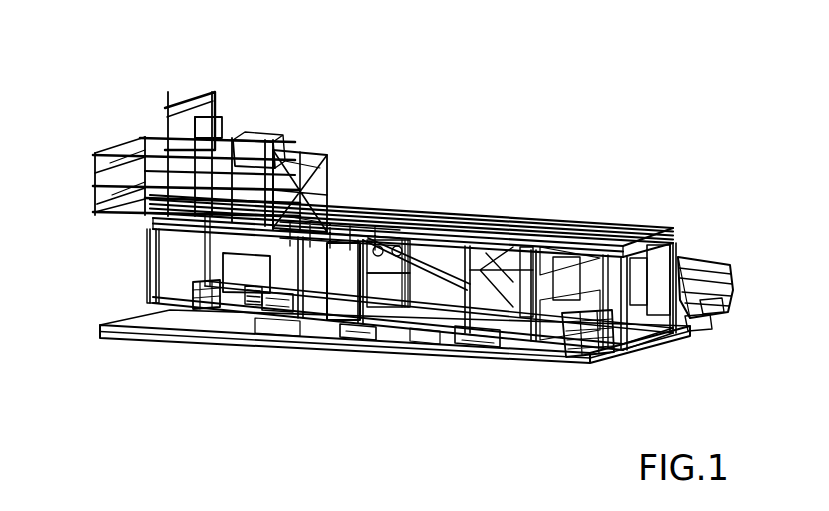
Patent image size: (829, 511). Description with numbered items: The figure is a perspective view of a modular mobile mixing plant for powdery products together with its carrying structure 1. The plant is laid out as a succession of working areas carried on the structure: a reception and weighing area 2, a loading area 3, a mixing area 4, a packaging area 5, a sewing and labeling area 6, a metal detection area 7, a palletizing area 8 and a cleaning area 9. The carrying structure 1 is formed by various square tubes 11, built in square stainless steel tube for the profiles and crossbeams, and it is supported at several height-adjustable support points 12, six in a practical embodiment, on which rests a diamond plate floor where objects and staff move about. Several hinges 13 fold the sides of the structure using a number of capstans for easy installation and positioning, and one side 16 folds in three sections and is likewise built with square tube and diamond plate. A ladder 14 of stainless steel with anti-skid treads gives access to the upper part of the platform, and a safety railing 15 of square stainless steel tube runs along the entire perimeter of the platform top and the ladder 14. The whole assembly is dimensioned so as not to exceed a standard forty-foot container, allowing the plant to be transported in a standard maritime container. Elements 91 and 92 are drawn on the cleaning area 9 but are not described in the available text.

The carrying structure 1 is at (418, 207).
The reception and weighing area 2 is at (127, 120).
The loading area 3 is at (197, 303).
The mixing area 4 is at (357, 187).
The packaging area 5 is at (530, 213).
The sewing and labeling area 6 is at (480, 340).
The metal detection area 7 is at (553, 340).
The palletizing area 8 is at (627, 350).
The cleaning area 9 is at (700, 257).
The square tubes 11 is at (148, 273).
The height-adjustable support points 12 is at (262, 335).
The hinges 13 is at (230, 317).
The ladder 14 is at (320, 183).
The safety railing 15 is at (293, 150).
The side 16 is at (353, 333).
The connector 91 is at (710, 310).
The support 92 is at (697, 323).